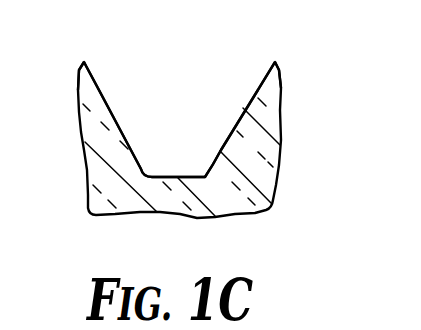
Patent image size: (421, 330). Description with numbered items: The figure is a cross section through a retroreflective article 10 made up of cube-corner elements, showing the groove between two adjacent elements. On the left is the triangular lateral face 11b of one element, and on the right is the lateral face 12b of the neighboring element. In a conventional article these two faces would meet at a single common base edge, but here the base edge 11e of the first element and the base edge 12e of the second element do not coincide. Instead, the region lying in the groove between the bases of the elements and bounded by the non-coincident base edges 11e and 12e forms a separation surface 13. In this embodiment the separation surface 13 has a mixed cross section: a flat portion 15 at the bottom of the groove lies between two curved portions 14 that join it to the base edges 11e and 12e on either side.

The retroreflective article 10 is at (285, 112).
The lateral face 11b is at (100, 83).
The base edge 11e is at (144, 171).
The lateral face 12b is at (256, 90).
The base edge 12e is at (215, 166).
The separation surface 13 is at (175, 176).
The curved portion 14 is at (145, 141).
The flat portion 15 is at (198, 176).